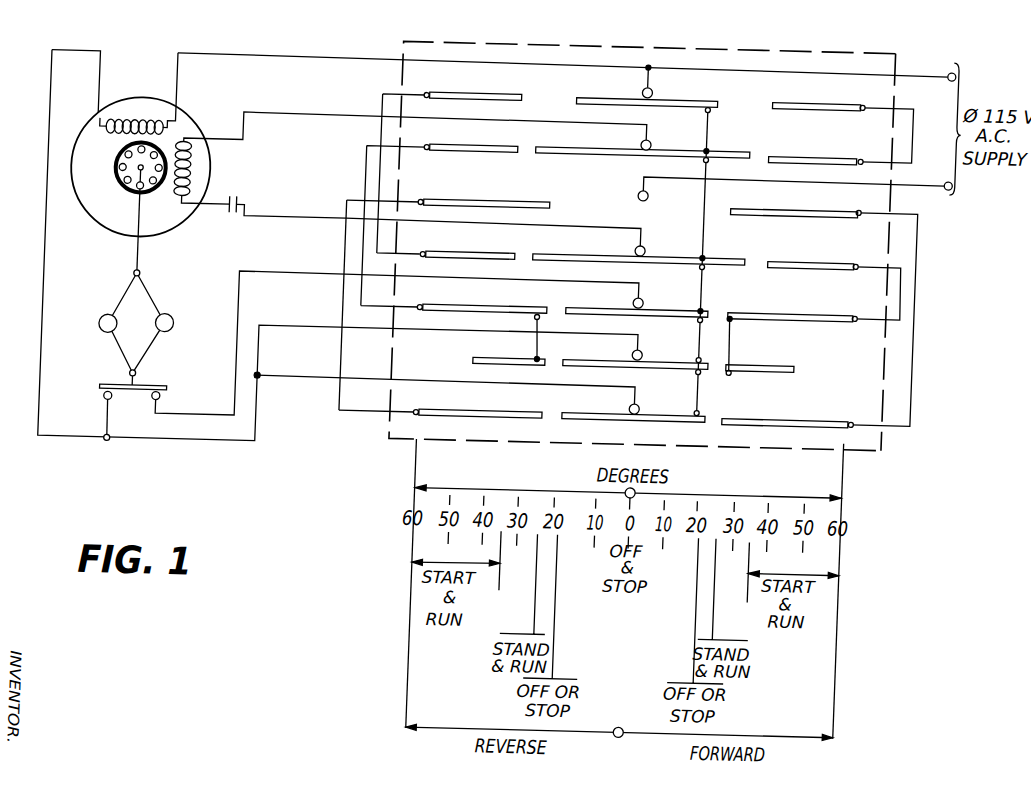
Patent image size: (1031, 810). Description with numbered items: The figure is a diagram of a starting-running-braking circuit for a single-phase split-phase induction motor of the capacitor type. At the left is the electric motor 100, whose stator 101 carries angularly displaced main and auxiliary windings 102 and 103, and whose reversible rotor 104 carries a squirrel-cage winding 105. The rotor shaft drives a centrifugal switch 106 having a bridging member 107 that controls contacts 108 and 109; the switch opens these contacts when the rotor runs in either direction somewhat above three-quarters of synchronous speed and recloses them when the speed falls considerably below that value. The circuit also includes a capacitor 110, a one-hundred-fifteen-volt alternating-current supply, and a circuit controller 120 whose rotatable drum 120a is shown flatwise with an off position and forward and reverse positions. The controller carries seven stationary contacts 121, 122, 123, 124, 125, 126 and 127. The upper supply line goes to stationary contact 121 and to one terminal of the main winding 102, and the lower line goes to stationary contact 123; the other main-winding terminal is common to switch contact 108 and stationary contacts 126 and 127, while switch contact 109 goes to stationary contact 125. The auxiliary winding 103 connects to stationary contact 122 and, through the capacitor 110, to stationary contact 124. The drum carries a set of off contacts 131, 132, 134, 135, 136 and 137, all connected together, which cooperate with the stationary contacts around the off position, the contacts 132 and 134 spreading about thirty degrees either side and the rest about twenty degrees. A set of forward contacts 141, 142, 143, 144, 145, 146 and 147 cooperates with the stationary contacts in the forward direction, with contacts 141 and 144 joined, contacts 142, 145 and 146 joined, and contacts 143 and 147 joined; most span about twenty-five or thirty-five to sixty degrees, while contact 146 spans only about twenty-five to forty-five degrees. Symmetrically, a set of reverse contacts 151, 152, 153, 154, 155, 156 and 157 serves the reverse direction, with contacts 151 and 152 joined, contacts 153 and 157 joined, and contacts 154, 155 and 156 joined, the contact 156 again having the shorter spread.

The electric motor 100 is at (149, 94).
The stator 101 is at (221, 112).
The main winding 102 is at (96, 128).
The auxiliary winding 103 is at (188, 171).
The reversible rotor 104 is at (118, 172).
The squirrel-cage winding 105 is at (116, 191).
The centrifugal switch 106 is at (193, 308).
The bridging member 107 is at (150, 394).
The switch contact 108 is at (110, 405).
The switch contact 109 is at (166, 404).
The capacitor 110 is at (226, 219).
The circuit controller 120 is at (493, 45).
The drum 120a is at (764, 45).
The stationary contact 121 is at (648, 90).
The stationary contact 122 is at (649, 142).
The stationary contact 123 is at (648, 194).
The stationary contact 124 is at (647, 249).
The stationary contact 125 is at (647, 301).
The stationary contact 126 is at (648, 353).
The stationary contact 127 is at (647, 406).
The off contact 131 is at (578, 96).
The off contact 132 is at (578, 149).
The off contact 134 is at (575, 257).
The off contact 135 is at (575, 308).
The off contact 136 is at (576, 361).
The off contact 137 is at (574, 413).
The forward contact 141 is at (446, 95).
The forward contact 142 is at (446, 149).
The forward contact 143 is at (446, 203).
The forward contact 144 is at (447, 256).
The forward contact 145 is at (447, 309).
The forward contact 146 is at (496, 359).
The forward contact 147 is at (445, 413).
The reverse contact 151 is at (781, 97).
The reverse contact 152 is at (780, 151).
The reverse contact 153 is at (778, 204).
The reverse contact 154 is at (778, 256).
The reverse contact 155 is at (774, 308).
The reverse contact 156 is at (776, 360).
The reverse contact 157 is at (772, 414).